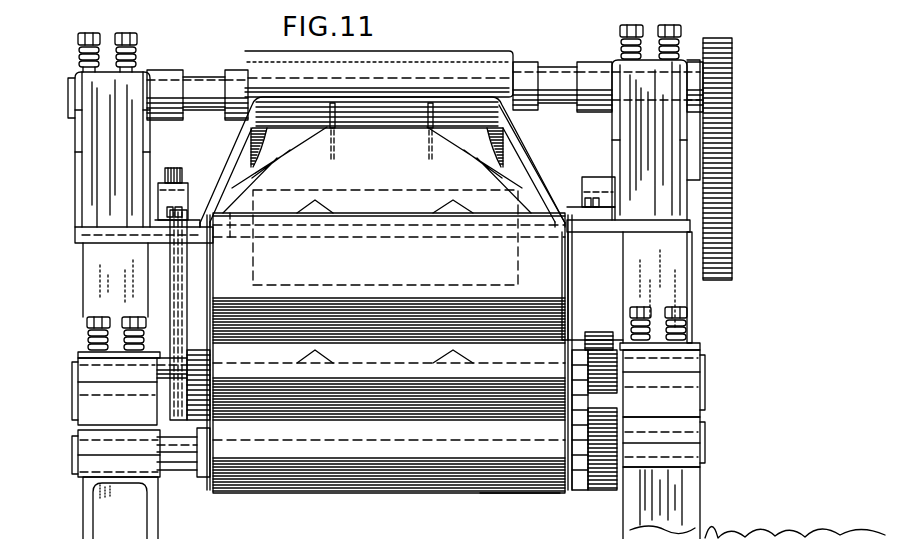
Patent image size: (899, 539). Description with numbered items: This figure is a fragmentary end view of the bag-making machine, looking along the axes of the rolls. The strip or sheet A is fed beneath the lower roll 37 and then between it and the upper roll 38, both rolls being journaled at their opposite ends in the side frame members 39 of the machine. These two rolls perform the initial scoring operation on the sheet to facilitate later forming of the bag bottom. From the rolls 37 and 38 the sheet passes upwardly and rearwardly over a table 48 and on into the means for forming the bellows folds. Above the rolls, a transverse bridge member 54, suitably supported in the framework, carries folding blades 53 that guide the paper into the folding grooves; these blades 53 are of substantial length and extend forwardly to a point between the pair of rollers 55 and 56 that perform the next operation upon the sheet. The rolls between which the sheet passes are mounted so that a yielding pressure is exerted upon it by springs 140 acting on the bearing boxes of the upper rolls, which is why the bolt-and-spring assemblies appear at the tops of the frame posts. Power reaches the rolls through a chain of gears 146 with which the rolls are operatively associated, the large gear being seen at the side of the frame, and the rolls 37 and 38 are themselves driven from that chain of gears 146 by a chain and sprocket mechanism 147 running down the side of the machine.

The roller 55 is at (432, 57).
The blades 53 is at (434, 103).
The roller 56 is at (528, 143).
The transverse bridge member 54 is at (540, 162).
The chain of gears 146 is at (732, 133).
The chain and sprocket mechanism 147 is at (183, 288).
The table 48 is at (567, 285).
The roll 38 is at (578, 337).
The side frame members 39 is at (690, 297).
The springs 140 is at (690, 327).
The roll 37 is at (402, 457).
The strip or sheet A is at (521, 491).